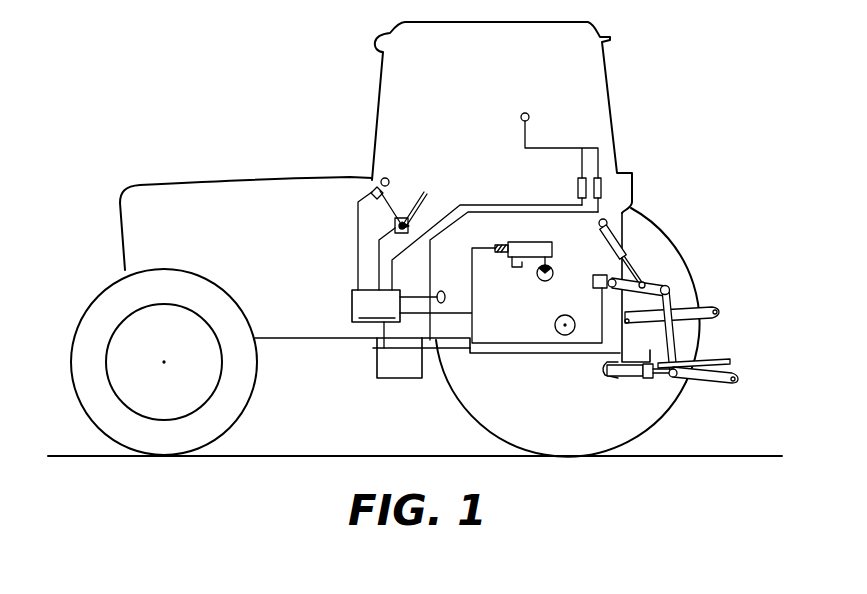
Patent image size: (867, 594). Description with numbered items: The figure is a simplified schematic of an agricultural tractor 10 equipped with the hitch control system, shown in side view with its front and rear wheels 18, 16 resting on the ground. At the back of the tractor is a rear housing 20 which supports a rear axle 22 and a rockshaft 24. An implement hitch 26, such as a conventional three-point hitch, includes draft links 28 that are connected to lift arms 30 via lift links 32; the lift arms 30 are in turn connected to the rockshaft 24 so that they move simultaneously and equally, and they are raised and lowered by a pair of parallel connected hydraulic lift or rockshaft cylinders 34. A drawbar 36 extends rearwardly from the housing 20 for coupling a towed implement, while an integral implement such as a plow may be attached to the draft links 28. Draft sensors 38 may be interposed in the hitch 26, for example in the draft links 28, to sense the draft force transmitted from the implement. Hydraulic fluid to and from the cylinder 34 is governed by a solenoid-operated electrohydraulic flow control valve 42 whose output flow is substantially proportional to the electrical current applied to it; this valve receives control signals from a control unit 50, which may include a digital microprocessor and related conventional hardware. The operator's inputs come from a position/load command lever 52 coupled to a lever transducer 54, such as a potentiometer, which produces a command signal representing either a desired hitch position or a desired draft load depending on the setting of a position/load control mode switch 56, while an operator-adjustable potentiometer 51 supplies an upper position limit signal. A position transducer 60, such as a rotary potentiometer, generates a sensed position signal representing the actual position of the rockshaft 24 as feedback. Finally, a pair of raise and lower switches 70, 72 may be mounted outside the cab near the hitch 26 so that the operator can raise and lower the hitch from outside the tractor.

The tractor 10 is at (248, 45).
The rear wheel 16 is at (470, 420).
The front wheel 18 is at (247, 317).
The rear housing 20 is at (632, 212).
The rear axle 22 is at (558, 317).
The rockshaft 24 is at (608, 288).
The implement hitch 26 is at (676, 293).
The draft links 28 is at (727, 382).
The lift arms 30 is at (645, 282).
The lift links 32 is at (683, 323).
The hydraulic lift or rockshaft cylinders 34 is at (626, 248).
The drawbar 36 is at (723, 362).
The draft sensors 38 is at (647, 380).
The solenoid-operated electrohydraulic flow control valve 42 is at (535, 241).
The control unit 50 is at (477, 267).
The operator-adjustable potentiometer 51 is at (392, 178).
The position/load command lever 52 is at (435, 177).
The lever transducer 54 is at (410, 227).
The position/load control mode switch 56 is at (453, 285).
The position transducer 60 is at (593, 282).
The raise switch 70 is at (578, 186).
The lower switch 72 is at (607, 187).